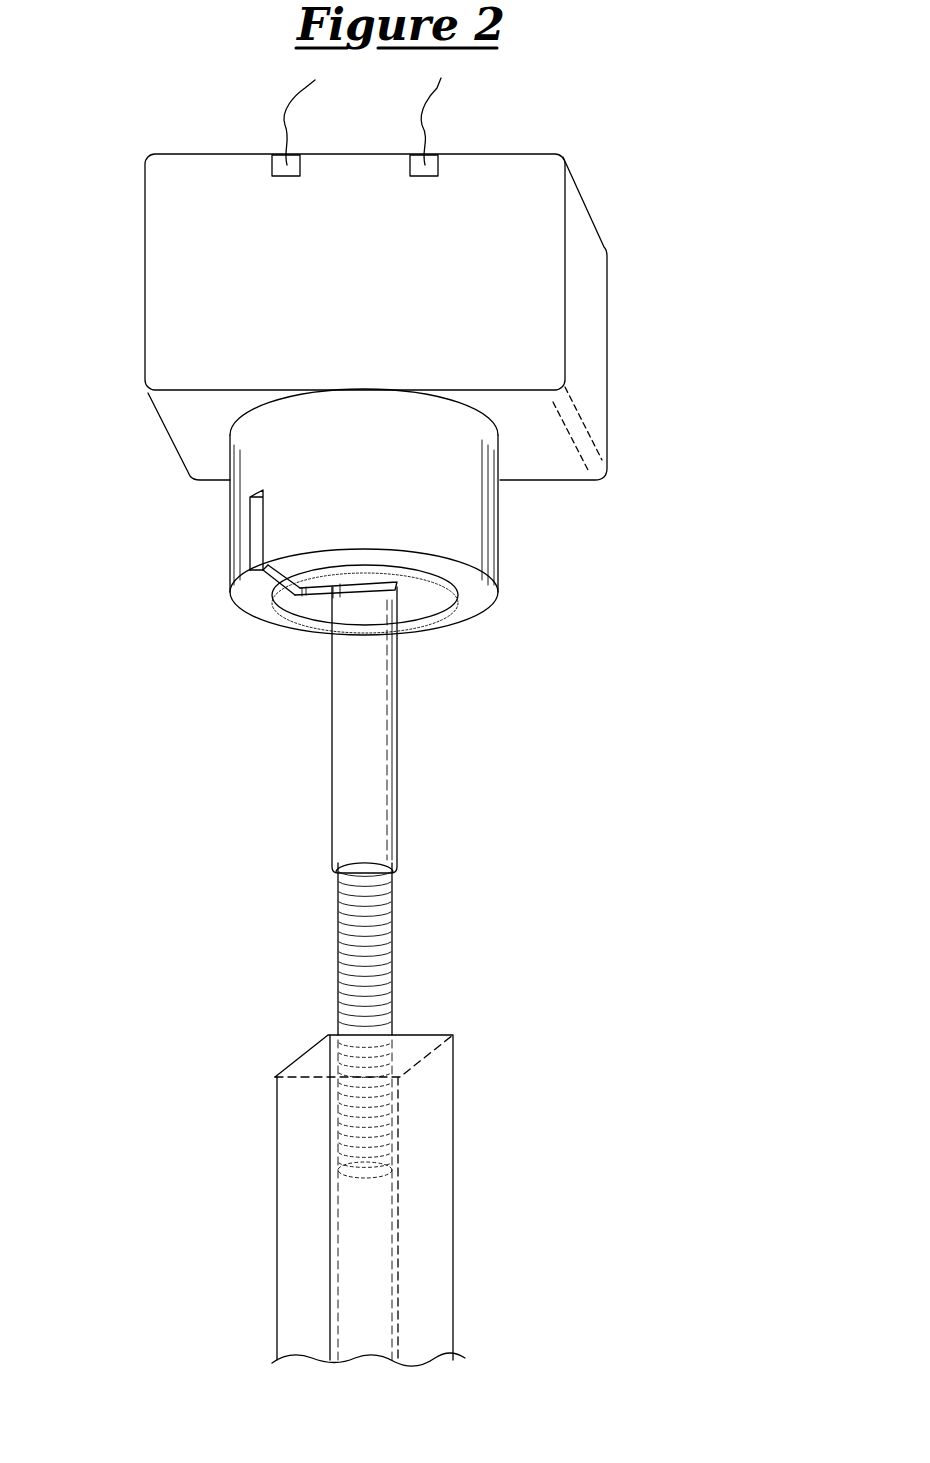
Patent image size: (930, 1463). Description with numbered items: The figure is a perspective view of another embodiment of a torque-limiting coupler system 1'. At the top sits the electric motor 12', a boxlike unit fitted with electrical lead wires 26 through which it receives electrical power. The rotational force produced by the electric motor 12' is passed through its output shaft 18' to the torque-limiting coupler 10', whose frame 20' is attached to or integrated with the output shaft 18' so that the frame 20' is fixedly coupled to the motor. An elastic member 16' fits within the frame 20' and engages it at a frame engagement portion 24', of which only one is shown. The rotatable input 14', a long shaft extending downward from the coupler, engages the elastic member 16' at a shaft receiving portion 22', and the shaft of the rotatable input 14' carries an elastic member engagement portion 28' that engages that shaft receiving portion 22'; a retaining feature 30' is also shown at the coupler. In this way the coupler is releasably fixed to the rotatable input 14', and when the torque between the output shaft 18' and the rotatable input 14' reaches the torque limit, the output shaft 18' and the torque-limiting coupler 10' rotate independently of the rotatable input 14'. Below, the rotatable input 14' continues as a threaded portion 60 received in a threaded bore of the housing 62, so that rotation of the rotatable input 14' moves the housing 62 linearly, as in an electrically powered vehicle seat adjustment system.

The torque-limiting coupler system 1' is at (652, 52).
The torque-limiting coupler 10' is at (660, 501).
The electric motor 12' is at (325, 317).
The rotatable input 14' is at (400, 730).
The elastic member 16' is at (316, 627).
The output shaft 18' is at (194, 526).
The frame 20' is at (421, 512).
The shaft receiving portion 22' is at (309, 634).
The frame engagement portion 24' is at (244, 619).
The electrical lead wires 26 is at (415, 118).
The elastic member engagement portion 28' is at (369, 617).
The retaining clip 30' is at (202, 555).
The threaded rod 60 is at (382, 946).
The housing 62 is at (437, 1087).